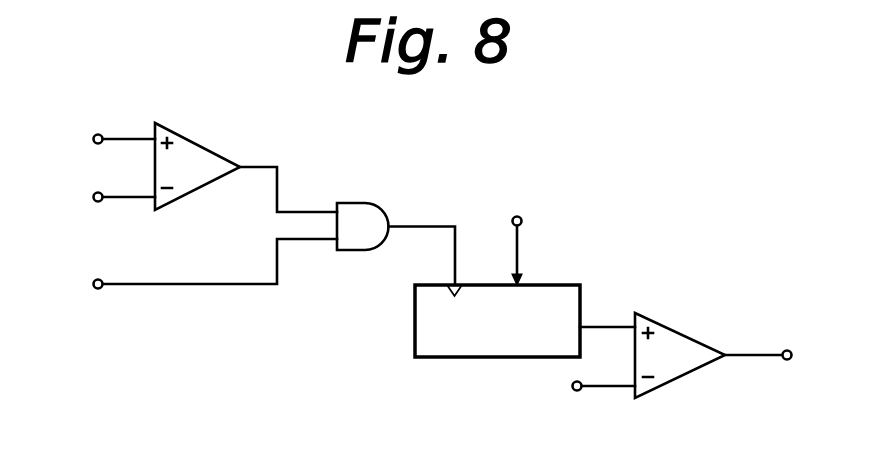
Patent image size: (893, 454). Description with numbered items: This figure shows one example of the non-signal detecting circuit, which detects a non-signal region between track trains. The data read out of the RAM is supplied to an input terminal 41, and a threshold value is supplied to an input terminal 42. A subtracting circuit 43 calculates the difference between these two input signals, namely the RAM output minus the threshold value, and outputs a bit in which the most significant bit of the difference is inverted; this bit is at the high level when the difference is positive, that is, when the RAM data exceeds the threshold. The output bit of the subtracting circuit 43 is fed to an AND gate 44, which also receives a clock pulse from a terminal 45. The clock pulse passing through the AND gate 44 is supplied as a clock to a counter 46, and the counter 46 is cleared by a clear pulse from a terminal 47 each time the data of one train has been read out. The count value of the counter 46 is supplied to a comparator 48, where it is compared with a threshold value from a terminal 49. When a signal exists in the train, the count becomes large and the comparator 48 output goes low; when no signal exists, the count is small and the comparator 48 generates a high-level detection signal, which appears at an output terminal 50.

The input terminal 41 is at (93, 139).
The input terminal 42 is at (93, 197).
The subtracting circuit 43 is at (210, 182).
The AND gate 44 is at (352, 251).
The terminal 45 is at (93, 284).
The counter 46 is at (482, 358).
The terminal 47 is at (523, 218).
The comparator 48 is at (689, 374).
The terminal 49 is at (577, 391).
The output terminal 50 is at (787, 360).